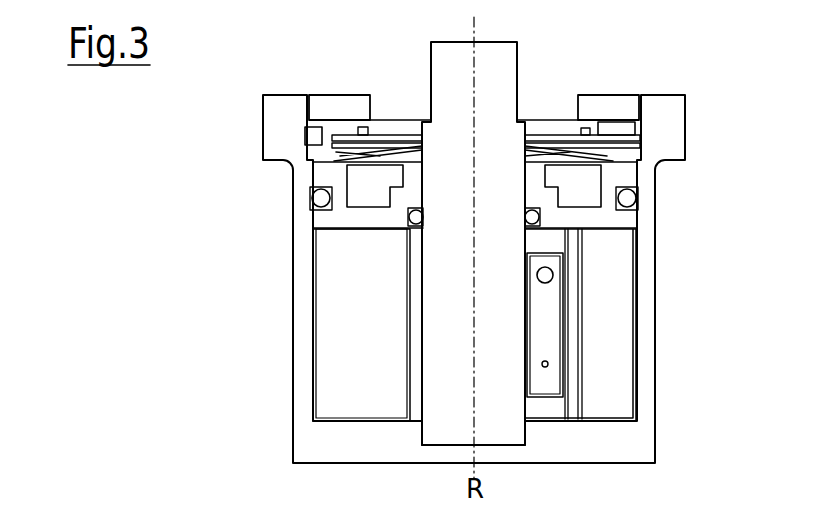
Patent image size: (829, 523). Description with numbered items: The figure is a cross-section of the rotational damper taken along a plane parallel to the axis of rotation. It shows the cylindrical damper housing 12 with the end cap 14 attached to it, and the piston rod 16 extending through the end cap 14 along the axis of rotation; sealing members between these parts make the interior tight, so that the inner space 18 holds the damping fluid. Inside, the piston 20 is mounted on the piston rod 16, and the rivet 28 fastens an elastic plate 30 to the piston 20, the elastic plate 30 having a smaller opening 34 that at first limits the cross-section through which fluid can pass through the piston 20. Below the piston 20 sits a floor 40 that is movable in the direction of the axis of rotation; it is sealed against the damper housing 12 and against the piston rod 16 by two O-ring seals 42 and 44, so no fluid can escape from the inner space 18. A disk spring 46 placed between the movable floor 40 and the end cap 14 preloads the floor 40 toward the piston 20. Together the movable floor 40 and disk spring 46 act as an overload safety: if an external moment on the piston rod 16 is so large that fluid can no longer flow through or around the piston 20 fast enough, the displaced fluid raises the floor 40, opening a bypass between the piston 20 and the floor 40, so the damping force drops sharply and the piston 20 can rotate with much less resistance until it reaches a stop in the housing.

The damper housing 12 is at (647, 310).
The end cap 14 is at (328, 104).
The piston rod 16 is at (446, 60).
The inner space 18 is at (327, 298).
The piston 20 is at (557, 410).
The rivet 28 is at (553, 278).
The elastic plate 30 is at (542, 388).
The opening 34 is at (548, 366).
The movable floor 40 is at (618, 218).
The seal 42 is at (634, 202).
The seal 44 is at (531, 208).
The disk spring 46 is at (608, 153).